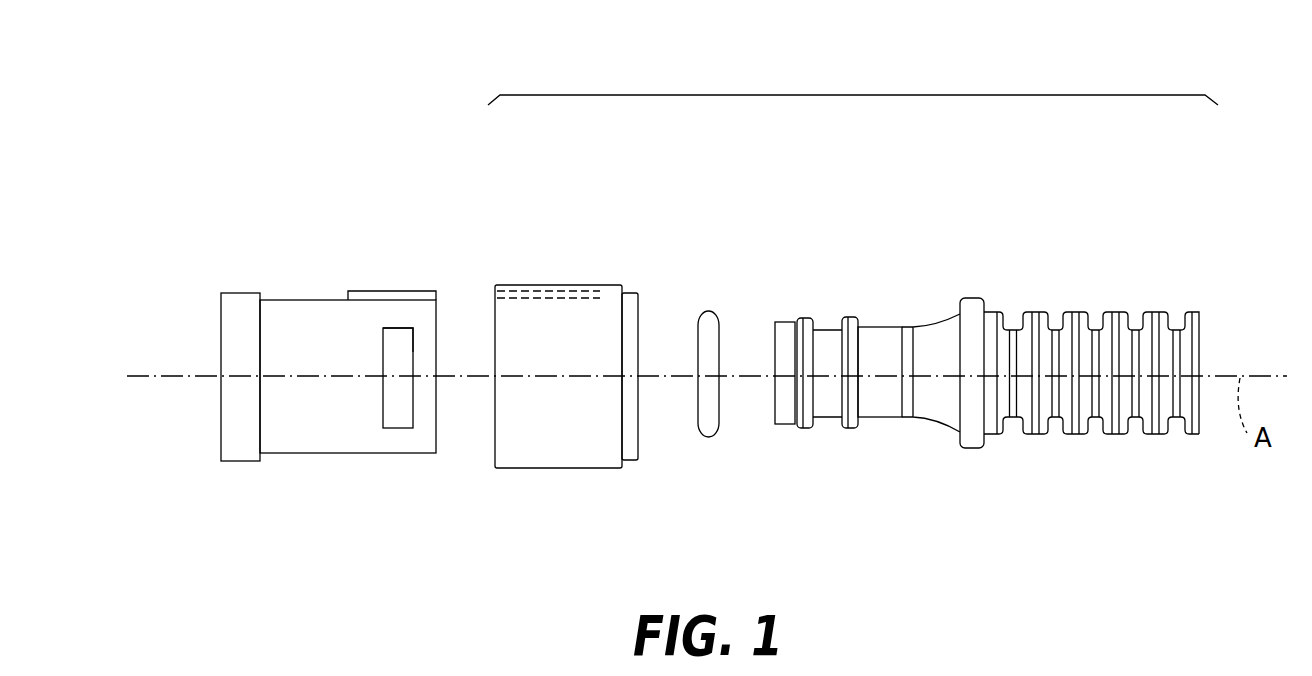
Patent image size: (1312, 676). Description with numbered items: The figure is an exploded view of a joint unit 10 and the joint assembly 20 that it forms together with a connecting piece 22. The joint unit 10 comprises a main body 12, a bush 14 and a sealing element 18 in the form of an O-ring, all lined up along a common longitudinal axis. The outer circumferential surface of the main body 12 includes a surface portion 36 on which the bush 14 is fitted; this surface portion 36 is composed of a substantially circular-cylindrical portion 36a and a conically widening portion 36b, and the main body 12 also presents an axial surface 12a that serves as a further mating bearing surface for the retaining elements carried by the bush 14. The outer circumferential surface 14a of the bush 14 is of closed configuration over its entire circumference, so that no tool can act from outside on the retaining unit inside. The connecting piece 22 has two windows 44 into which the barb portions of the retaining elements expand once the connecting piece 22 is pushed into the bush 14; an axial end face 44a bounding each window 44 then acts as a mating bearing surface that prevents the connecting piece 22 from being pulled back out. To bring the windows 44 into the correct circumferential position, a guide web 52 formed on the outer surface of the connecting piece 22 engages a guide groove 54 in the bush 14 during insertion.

The joint unit 10 is at (793, 95).
The main body 12 is at (786, 415).
The axial surface of the main body 12a is at (858, 427).
The bush 14 is at (547, 458).
The outer circumferential surface of the bush 14a is at (607, 312).
The sealing element 18 is at (708, 434).
The joint assembly 20 is at (252, 95).
The connecting piece 22 is at (239, 455).
The surface portion 36 is at (892, 402).
The circular-cylindrical portion 36a is at (883, 345).
The conically widening portion 36b is at (937, 340).
The window 44 is at (397, 417).
The axial end face of the connecting piece 44a is at (412, 352).
The guide web 52 is at (352, 291).
The guide groove 54 is at (541, 291).